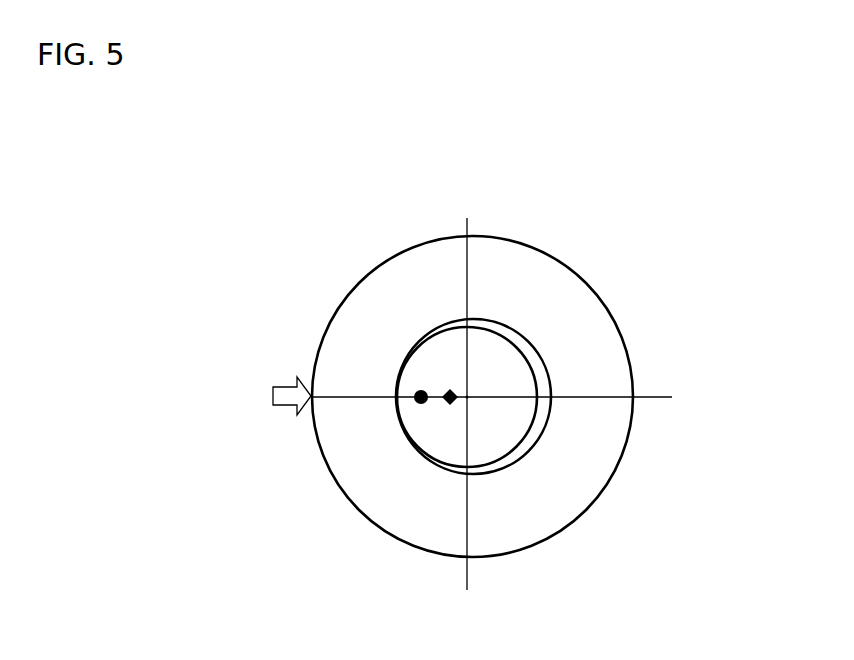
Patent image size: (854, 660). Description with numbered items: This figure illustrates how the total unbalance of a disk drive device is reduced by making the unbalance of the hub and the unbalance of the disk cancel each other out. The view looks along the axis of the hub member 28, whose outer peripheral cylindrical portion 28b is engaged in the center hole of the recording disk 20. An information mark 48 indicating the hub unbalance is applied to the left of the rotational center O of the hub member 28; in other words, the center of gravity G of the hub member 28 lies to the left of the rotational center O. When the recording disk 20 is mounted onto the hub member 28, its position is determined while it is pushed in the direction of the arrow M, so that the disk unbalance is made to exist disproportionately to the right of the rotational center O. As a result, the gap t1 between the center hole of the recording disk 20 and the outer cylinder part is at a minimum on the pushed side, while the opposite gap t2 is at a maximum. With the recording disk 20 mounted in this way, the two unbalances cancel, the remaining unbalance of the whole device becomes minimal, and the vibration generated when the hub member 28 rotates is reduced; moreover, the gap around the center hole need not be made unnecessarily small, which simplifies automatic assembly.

The recording disk 20 is at (533, 396).
The hub member 28 is at (503, 372).
The outer peripheral cylindrical portion 28b is at (513, 450).
The gap t2 is at (542, 405).
The gap t1 is at (397, 398).
The rotational center O is at (463, 402).
The information mark 48 is at (418, 390).
The center of gravity G is at (418, 282).
The arrow M is at (282, 402).